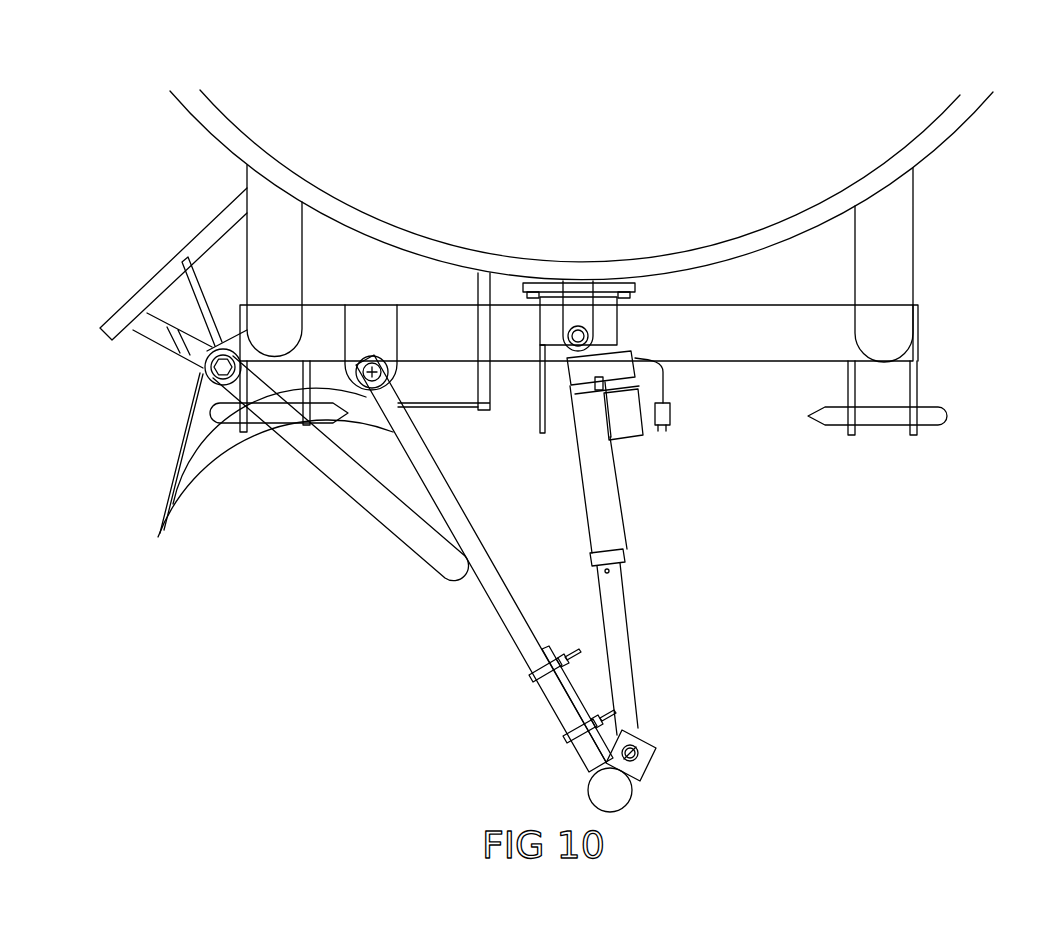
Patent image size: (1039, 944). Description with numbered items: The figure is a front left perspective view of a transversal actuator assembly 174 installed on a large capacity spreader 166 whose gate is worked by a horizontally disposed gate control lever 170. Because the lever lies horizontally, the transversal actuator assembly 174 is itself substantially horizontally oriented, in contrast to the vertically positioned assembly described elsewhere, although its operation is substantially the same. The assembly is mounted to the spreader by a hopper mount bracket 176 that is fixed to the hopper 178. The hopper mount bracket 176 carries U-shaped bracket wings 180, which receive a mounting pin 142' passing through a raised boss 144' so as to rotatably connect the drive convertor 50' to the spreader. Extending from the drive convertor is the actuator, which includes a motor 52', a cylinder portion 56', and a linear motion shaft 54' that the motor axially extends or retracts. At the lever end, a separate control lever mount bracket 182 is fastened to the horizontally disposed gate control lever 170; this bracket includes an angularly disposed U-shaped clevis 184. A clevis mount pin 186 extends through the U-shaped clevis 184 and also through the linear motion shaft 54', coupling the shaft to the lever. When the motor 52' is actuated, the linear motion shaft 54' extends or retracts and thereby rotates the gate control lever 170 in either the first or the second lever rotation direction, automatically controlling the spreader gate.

The large capacity spreader 166 is at (645, 230).
The hopper 178 is at (933, 157).
The hopper mount bracket 176 is at (622, 283).
The U-shaped bracket wings 180 is at (578, 303).
The mounting pin 142' is at (552, 283).
The raised boss 144' is at (522, 391).
The drive convertor 50' is at (577, 412).
The motor 52' is at (643, 421).
The actuator cylinder 56' is at (621, 477).
The linear motion shaft 54' is at (641, 649).
The transversal actuator assembly 174 is at (718, 638).
The horizontally disposed gate control lever 170 is at (513, 613).
The control lever mount bracket 182 is at (575, 712).
The U-shaped clevis 184 is at (650, 743).
The clevis mount pin 186 is at (640, 762).